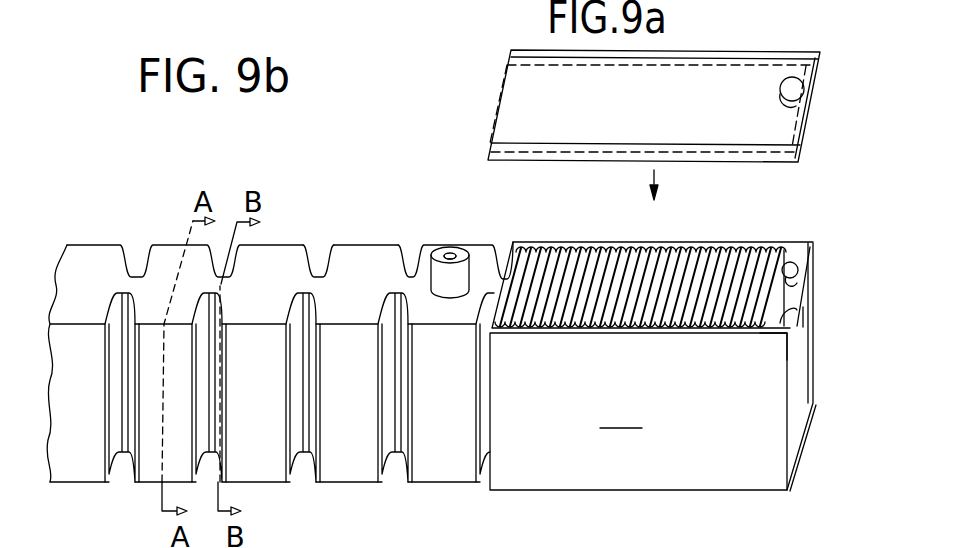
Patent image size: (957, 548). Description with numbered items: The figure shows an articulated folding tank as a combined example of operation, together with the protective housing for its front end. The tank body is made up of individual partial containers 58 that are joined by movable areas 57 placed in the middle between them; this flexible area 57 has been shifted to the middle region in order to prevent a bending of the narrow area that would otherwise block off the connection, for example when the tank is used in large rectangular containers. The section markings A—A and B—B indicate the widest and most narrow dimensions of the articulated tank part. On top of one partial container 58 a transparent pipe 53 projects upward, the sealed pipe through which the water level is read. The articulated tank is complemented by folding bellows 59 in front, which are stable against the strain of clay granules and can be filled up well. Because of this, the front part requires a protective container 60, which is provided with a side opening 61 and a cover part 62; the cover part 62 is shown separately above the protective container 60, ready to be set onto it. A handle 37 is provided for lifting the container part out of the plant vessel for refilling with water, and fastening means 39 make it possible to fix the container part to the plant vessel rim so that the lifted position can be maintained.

In FIG. 9a, the cover part 62 is at (510, 122).
In FIG. 9b, the movable area 57 is at (312, 280).
In FIG. 9b, the partial container 58 is at (363, 257).
In FIG. 9b, the transparent pipe 53 is at (461, 256).
In FIG. 9b, the folding bellows 59 is at (693, 253).
In FIG. 9b, the handle 37 is at (792, 253).
In FIG. 9b, the side opening 61 is at (513, 333).
In FIG. 9b, the protective container 60 is at (653, 367).
In FIG. 9b, the fastening means 39 is at (767, 333).